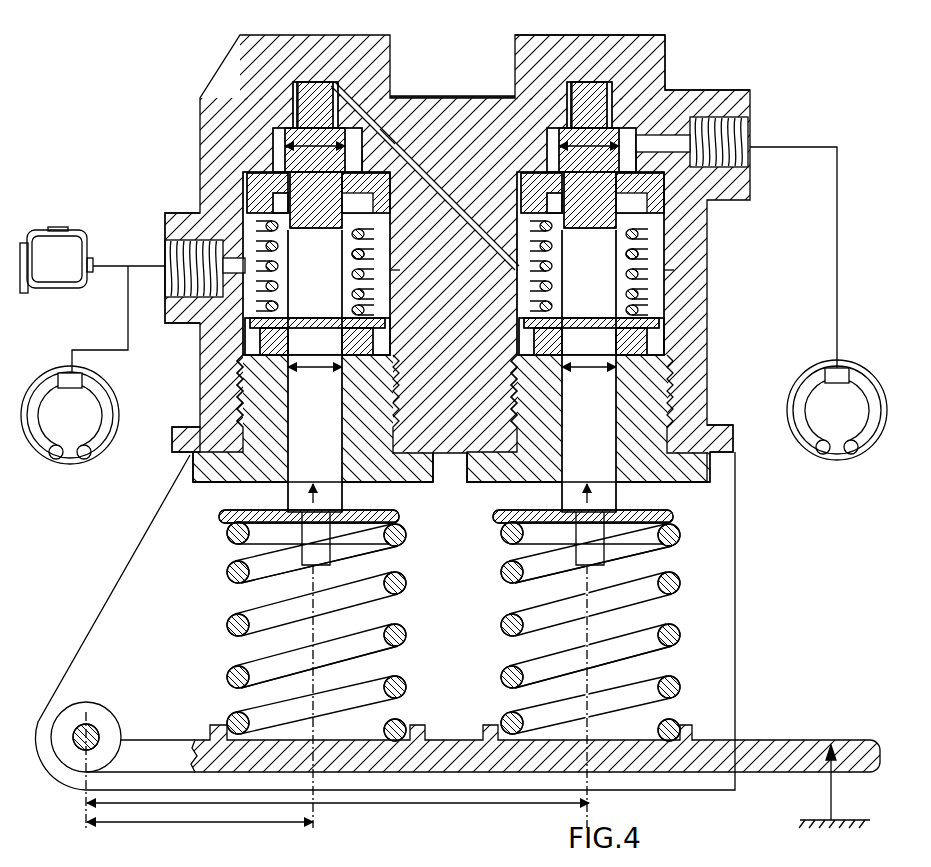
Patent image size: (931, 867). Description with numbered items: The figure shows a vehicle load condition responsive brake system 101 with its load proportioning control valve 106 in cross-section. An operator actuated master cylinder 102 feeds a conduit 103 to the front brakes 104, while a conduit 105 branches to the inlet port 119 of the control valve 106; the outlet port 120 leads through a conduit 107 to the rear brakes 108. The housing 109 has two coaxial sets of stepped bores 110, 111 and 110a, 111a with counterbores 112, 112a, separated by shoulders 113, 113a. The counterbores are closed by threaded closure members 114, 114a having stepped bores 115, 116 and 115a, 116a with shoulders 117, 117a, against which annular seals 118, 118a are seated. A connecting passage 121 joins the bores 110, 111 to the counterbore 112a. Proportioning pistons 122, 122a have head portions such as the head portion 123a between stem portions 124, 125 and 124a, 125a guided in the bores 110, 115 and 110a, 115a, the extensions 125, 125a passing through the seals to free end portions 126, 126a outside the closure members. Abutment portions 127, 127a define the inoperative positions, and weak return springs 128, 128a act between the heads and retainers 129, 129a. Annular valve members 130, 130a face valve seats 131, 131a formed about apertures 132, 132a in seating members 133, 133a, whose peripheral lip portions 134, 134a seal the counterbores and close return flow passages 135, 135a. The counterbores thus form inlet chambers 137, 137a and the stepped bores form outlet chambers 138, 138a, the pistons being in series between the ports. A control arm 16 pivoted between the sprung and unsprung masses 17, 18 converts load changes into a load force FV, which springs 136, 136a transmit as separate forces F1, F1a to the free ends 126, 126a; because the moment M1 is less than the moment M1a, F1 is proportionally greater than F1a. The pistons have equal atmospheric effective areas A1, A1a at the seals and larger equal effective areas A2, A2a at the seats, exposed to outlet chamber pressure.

The control arm 16 is at (752, 742).
The sprung mass 17 is at (76, 641).
The unsprung mass 18 is at (845, 820).
The vehicle load condition responsive brake system 101 is at (100, 226).
The master cylinder 102 is at (53, 228).
The conduit 103 is at (127, 328).
The front brakes 104 is at (88, 422).
The conduit 105 is at (143, 266).
The control valve 106 is at (486, 84).
The conduit 107 is at (838, 305).
The rear brakes 108 is at (856, 422).
The housing 109 is at (462, 100).
The stepped bore 110 is at (293, 100).
The stepped bore 110a is at (577, 82).
The stepped bore 111 is at (272, 140).
The stepped bore 111a is at (545, 130).
The counterbore 112 is at (250, 297).
The counterbore 112a is at (660, 280).
The shoulder 113 is at (247, 172).
The shoulder 113a is at (521, 174).
The closure member 114 is at (194, 465).
The closure member 114a is at (735, 467).
The stepped bore 115 is at (288, 468).
The stepped bore 115a is at (563, 468).
The stepped bore 116 is at (258, 343).
The stepped bore 116a is at (650, 345).
The shoulder 117 is at (265, 391).
The shoulder 117a is at (540, 350).
The annular seal 118 is at (377, 340).
The annular seal 118a is at (520, 342).
The inlet port 119 is at (163, 297).
The outlet port 120 is at (752, 125).
The connecting passage 121 is at (500, 270).
The proportioning piston 122 is at (335, 437).
The proportioning piston 122a is at (625, 437).
The head portion 123a is at (392, 228).
The stem portion 124 is at (327, 86).
The stem portion 124a is at (603, 108).
The stem portion 125 is at (343, 468).
The stem portion 125a is at (618, 468).
The free end portion 126 is at (302, 565).
The free end portion 126a is at (603, 560).
The abutment portion 127 is at (280, 118).
The abutment portion 127a is at (550, 120).
The return spring 128 is at (390, 297).
The return spring 128a is at (655, 300).
The retainer 129 is at (385, 325).
The retainer 129a is at (640, 325).
The annular valve member 130 is at (272, 155).
The annular valve member 130a is at (545, 152).
The valve seat 131 is at (315, 152).
The valve seat 131a is at (589, 152).
The aperture 132 is at (316, 200).
The aperture 132a is at (590, 200).
The seating member 133 is at (247, 190).
The seating member 133a is at (672, 180).
The peripheral lip portion 134 is at (247, 206).
The peripheral lip portion 134a is at (664, 205).
The return flow passage 135 is at (440, 176).
The return flow passage 135a is at (520, 212).
The spring 136 is at (236, 670).
The spring 136a is at (512, 625).
The inlet chamber 137 is at (392, 273).
The inlet chamber 137a is at (527, 310).
The outlet chamber 138 is at (399, 141).
The outlet chamber 138a is at (650, 129).
The effective area A1 is at (315, 347).
The effective area A1a is at (589, 347).
The effective area A2 is at (315, 135).
The effective area A2a is at (589, 133).
The load force F1 is at (271, 496).
The load force F1a is at (629, 497).
The load force FV is at (799, 782).
The moment M1 is at (199, 784).
The moment M1a is at (338, 817).